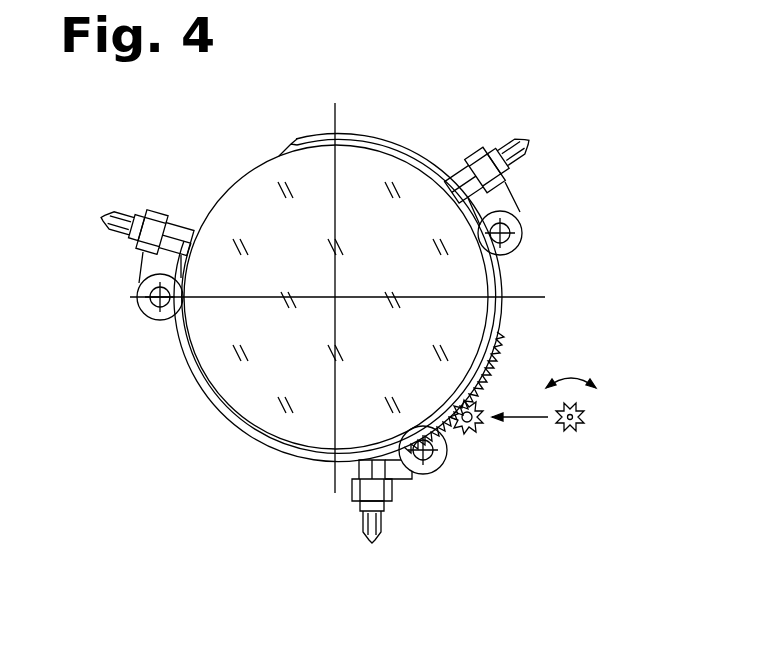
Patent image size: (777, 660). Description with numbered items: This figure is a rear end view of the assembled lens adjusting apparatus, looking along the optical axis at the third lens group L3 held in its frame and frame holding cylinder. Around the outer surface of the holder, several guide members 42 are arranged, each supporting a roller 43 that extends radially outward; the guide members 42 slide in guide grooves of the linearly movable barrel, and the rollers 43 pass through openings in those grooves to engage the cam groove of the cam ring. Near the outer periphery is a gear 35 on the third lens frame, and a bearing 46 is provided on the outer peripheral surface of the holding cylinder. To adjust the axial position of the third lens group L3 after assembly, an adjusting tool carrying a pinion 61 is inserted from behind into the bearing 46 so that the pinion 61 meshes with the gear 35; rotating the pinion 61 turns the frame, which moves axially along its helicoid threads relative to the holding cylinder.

The third lens group L3 is at (249, 205).
The guide members 42 is at (157, 214).
The rollers 43 is at (122, 214).
The gear 35 is at (451, 430).
The bearing 46 is at (480, 428).
The pinion 61 is at (574, 440).